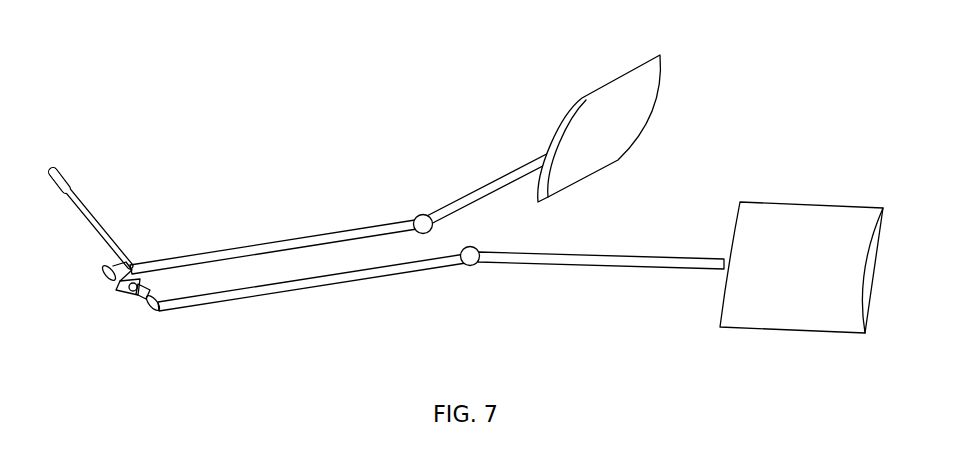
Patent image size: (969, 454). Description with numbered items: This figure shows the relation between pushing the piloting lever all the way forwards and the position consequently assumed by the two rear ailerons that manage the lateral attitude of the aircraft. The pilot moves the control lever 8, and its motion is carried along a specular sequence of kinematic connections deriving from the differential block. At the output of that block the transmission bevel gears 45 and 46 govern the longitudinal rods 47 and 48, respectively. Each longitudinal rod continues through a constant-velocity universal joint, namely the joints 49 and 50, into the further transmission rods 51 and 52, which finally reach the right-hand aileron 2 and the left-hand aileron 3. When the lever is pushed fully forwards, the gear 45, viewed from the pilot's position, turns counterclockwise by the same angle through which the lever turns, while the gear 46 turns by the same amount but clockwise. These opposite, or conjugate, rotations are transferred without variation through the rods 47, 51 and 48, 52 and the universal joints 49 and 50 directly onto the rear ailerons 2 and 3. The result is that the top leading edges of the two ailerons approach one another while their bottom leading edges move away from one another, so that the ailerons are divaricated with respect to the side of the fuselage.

The right-hand aileron 2 is at (617, 73).
The left-hand aileron 3 is at (802, 203).
The control lever 8 is at (68, 180).
The transmission bevel gear 45 is at (106, 279).
The transmission bevel gear 46 is at (156, 312).
The longitudinal rod 47 is at (263, 245).
The longitudinal rod 48 is at (302, 288).
The constant-velocity universal joint 49 is at (423, 213).
The constant-velocity universal joint 50 is at (467, 268).
The transmission rod 51 is at (495, 177).
The transmission rod 52 is at (600, 268).